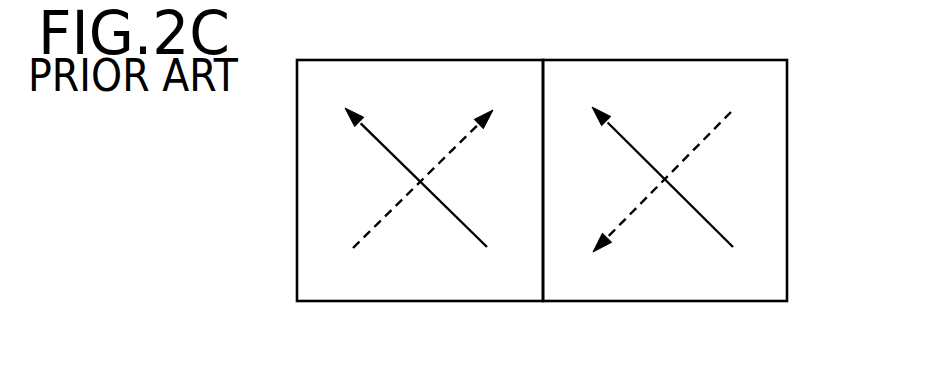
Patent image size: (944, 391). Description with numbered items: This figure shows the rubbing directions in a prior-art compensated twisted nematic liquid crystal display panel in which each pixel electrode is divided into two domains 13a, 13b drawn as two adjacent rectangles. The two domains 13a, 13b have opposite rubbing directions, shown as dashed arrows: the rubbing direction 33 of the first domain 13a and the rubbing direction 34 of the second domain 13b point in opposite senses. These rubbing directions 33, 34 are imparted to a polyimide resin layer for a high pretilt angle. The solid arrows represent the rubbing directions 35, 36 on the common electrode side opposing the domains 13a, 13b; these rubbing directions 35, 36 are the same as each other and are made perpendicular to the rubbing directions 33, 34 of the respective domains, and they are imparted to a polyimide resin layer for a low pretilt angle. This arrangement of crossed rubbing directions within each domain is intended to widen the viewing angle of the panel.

The domain 13a is at (403, 292).
The domain 13b is at (660, 288).
The rubbing direction 33 is at (365, 233).
The rubbing direction 34 is at (712, 133).
The rubbing direction 35 is at (377, 142).
The rubbing direction 36 is at (717, 228).